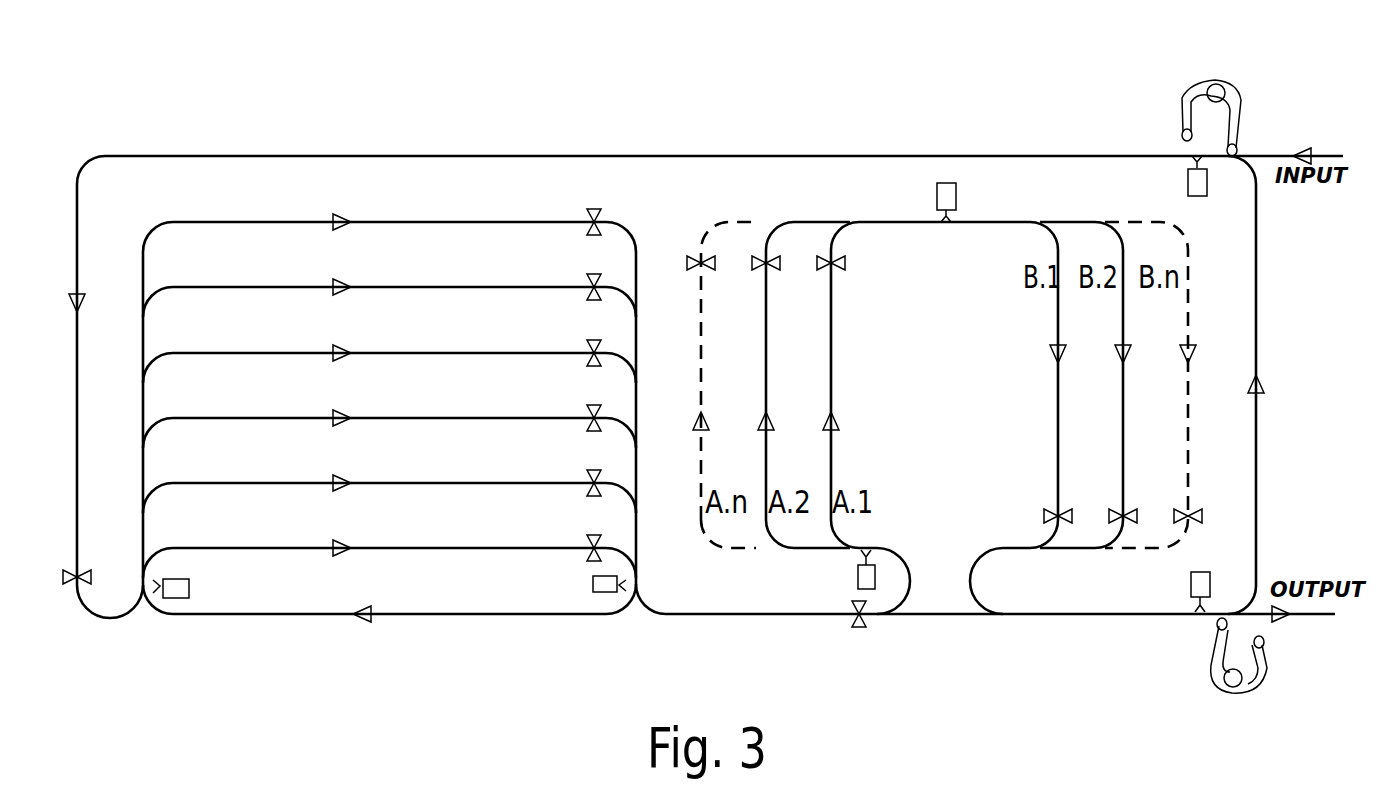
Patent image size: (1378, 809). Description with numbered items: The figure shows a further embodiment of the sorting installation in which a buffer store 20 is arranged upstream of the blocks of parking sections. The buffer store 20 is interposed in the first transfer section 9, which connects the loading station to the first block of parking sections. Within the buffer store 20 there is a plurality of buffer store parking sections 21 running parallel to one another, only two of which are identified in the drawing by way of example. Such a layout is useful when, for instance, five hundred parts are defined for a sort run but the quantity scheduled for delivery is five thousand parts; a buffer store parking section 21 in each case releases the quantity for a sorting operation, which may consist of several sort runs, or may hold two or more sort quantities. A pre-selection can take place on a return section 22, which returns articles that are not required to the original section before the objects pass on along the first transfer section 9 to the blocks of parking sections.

The first transfer section 9 is at (572, 155).
The buffer store 20 is at (225, 658).
The buffer store parking sections 21 is at (270, 287).
The return section 22 is at (450, 615).